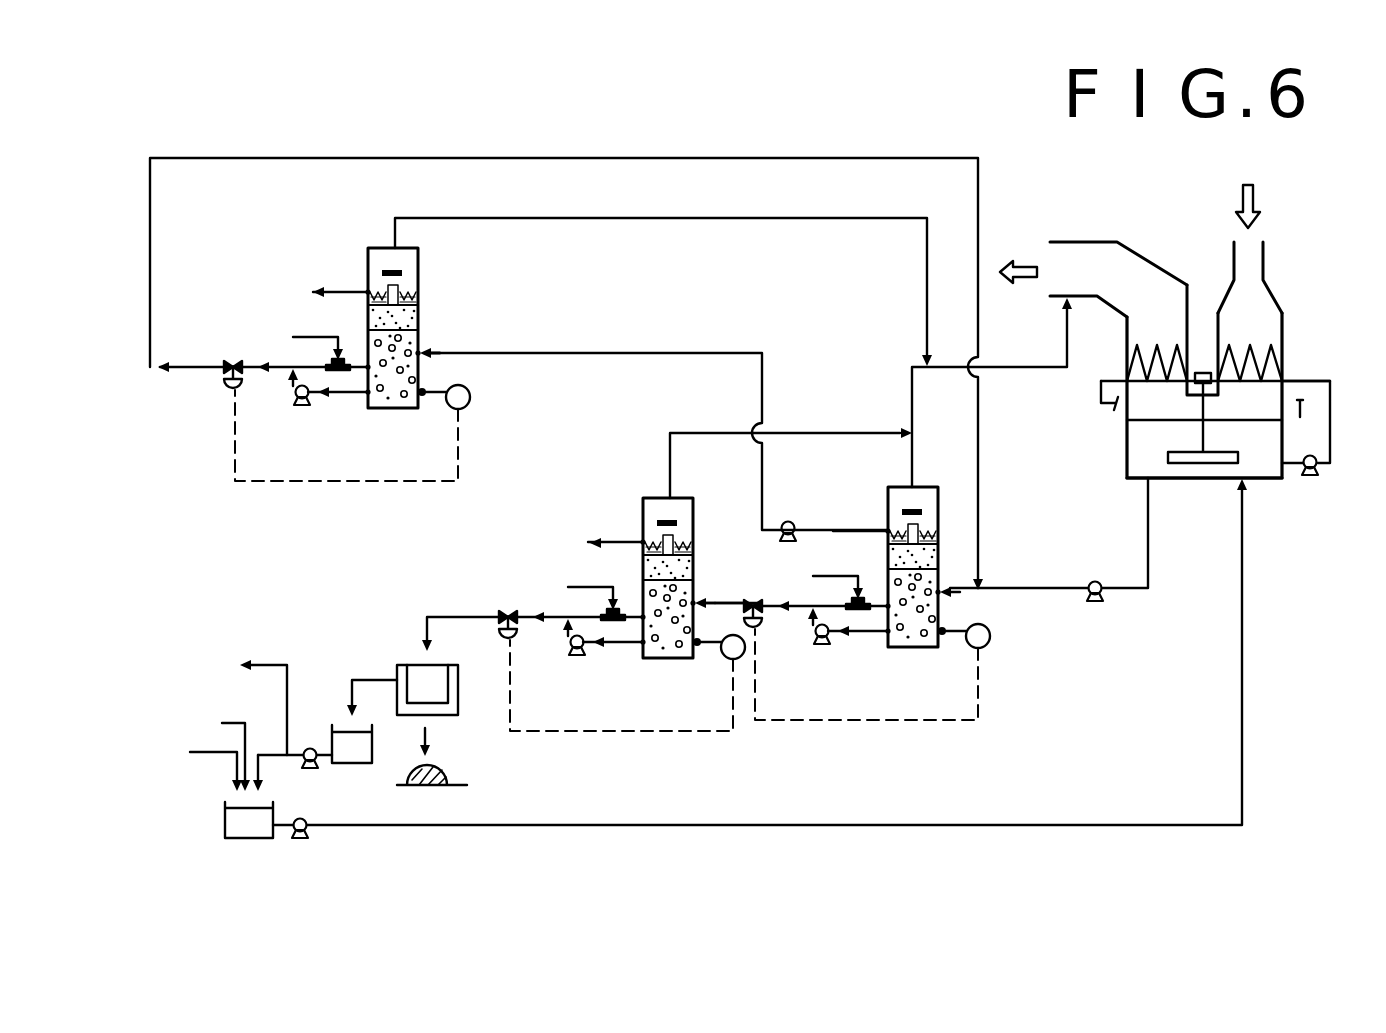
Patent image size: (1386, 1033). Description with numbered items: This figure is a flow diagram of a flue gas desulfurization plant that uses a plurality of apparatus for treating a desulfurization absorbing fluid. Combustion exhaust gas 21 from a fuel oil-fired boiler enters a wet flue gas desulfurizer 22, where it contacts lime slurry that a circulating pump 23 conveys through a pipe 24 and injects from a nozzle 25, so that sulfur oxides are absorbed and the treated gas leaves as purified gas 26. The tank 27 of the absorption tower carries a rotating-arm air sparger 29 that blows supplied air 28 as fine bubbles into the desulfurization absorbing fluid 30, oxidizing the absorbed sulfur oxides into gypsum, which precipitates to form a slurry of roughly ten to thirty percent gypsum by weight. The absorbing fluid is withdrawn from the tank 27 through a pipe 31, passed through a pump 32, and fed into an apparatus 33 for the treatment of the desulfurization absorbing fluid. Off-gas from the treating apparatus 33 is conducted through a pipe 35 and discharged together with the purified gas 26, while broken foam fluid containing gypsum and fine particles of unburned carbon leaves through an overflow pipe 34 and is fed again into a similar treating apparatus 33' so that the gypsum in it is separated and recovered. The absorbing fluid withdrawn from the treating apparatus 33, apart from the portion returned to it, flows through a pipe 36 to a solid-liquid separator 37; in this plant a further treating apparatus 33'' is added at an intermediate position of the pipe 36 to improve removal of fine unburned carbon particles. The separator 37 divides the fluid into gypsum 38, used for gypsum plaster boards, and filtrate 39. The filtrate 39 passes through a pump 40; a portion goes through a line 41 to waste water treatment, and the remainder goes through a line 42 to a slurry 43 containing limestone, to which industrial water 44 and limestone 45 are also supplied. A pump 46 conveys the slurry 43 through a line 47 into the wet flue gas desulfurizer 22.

The combustion exhaust gas 21 is at (1260, 200).
The wet flue gas desulfurizer 22 is at (1264, 270).
The circulating pump 23 is at (1312, 478).
The pipe 24 is at (1330, 436).
The nozzle 25 is at (1283, 365).
The purified gas 26 is at (1026, 262).
The tank 27 is at (1185, 480).
The air 28 is at (1203, 345).
The rotating-arm air sparger 29 is at (1240, 460).
The desulfurization absorbing fluid 30 is at (1127, 462).
The pipe 31 is at (1148, 592).
The pump 32 is at (1093, 604).
The apparatus for the treatment of the desulfurization absorbing fluid 33 is at (570, 439).
The treating apparatus 33' is at (545, 328).
The treating apparatus 33'' is at (705, 579).
The overflow pipe 34 is at (808, 526).
The pipe 35 is at (912, 432).
The pipe 36 is at (470, 612).
The solid-liquid separator 37 is at (458, 714).
The gypsum 38 is at (448, 783).
The filtrate 39 is at (352, 764).
The pump 40 is at (311, 745).
The line 41 is at (270, 662).
The line 42 is at (266, 748).
The slurry 43 is at (258, 839).
The industrial water 44 is at (228, 720).
The limestone 45 is at (195, 753).
The pump 46 is at (308, 838).
The line 47 is at (683, 827).